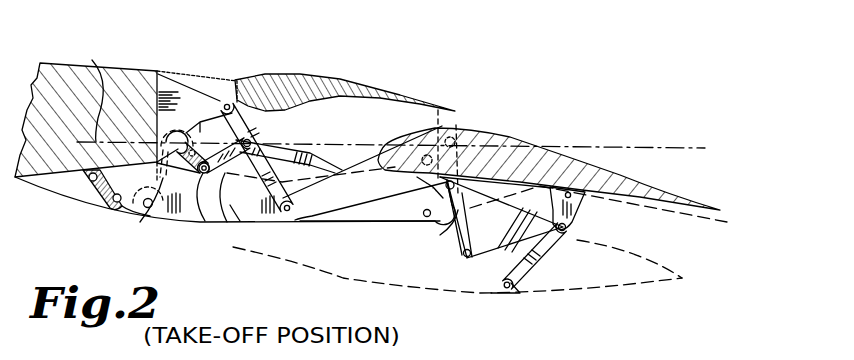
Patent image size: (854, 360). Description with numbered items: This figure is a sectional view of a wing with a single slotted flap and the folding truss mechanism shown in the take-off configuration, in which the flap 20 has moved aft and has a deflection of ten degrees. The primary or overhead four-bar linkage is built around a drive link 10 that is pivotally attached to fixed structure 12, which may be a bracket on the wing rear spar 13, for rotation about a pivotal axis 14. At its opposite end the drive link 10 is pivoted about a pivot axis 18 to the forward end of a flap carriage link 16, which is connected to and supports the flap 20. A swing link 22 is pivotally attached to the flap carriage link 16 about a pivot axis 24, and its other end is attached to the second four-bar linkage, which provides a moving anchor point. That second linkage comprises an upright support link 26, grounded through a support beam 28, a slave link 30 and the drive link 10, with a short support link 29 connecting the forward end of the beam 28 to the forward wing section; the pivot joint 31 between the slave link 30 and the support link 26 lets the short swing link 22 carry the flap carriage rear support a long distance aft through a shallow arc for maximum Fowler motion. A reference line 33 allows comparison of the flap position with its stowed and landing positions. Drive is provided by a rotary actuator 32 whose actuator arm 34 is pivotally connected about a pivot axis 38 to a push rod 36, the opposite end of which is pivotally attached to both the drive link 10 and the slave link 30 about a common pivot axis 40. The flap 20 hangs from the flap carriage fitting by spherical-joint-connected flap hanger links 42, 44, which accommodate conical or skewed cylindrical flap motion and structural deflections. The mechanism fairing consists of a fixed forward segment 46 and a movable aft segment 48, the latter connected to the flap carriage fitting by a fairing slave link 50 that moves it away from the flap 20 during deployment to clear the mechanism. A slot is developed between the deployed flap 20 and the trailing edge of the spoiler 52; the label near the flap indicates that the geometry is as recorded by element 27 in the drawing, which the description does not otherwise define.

The drive link 10 is at (268, 184).
The fixed structure 12 is at (200, 95).
The wing rear spar 13 is at (148, 94).
The pivotal axis 14 is at (283, 85).
The flap carriage link 16 is at (347, 200).
The pivot axis 18 is at (292, 222).
The flap 20 is at (522, 155).
The swing link 22 is at (433, 240).
The pivot axis 24 is at (467, 260).
The upright support link 26 is at (420, 226).
The link 27 is at (424, 213).
The support beam 28 is at (240, 223).
The short support link 29 is at (88, 204).
The slave link 30 is at (333, 160).
The pivot joint 31 is at (492, 133).
The rotary actuator 32 is at (178, 88).
The reference line 33 is at (92, 62).
The actuator arm 34 is at (157, 212).
The push rod 36 is at (215, 222).
The pivot axis 38 is at (195, 215).
The common pivot axis 40 is at (257, 142).
The flap hanger link 42 is at (573, 213).
The flap hanger link 44 is at (455, 125).
The fixed forward fairing segment 46 is at (100, 213).
The movable aft fairing segment 48 is at (294, 270).
The fairing slave link 50 is at (543, 260).
The spoiler 52 is at (360, 93).